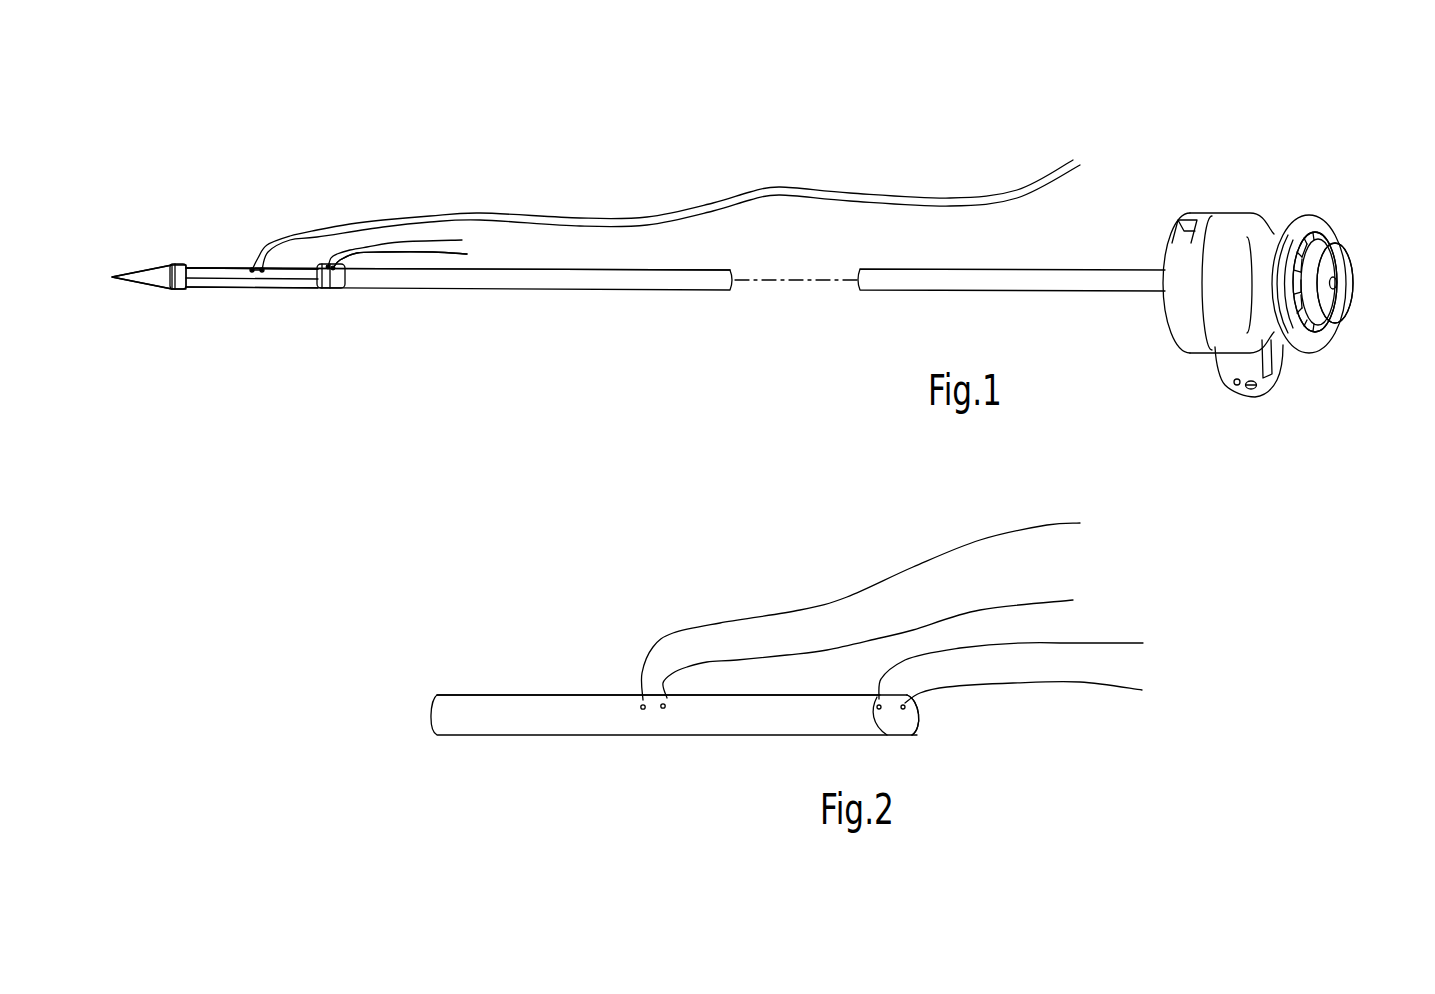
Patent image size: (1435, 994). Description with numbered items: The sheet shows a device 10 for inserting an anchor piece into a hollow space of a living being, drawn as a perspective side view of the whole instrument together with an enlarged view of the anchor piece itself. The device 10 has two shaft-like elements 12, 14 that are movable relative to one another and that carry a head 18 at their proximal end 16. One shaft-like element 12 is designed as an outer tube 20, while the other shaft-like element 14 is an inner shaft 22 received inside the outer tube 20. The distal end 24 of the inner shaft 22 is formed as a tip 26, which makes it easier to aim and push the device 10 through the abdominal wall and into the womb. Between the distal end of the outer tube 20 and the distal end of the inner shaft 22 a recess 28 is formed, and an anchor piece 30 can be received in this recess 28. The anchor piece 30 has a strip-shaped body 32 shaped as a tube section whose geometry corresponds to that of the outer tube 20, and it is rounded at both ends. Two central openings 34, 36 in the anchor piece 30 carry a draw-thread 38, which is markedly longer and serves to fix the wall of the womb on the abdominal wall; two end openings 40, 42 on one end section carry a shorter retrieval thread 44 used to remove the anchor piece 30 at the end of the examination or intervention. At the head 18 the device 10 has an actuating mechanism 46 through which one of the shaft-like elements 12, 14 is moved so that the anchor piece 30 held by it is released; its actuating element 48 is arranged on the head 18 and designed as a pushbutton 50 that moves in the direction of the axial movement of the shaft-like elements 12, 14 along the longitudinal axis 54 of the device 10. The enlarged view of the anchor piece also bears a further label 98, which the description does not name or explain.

In FIG. 1, the device 10 is at (711, 183).
In FIG. 1, the shaft-like element 12 is at (575, 291).
In FIG. 1, the shaft-like element 14 is at (287, 288).
In FIG. 1, the proximal end 16 is at (1238, 180).
In FIG. 1, the head 18 is at (1207, 412).
In FIG. 1, the outer tube 20 is at (640, 290).
In FIG. 1, the inner shaft 22 is at (223, 286).
In FIG. 1, the distal end 24 is at (182, 187).
In FIG. 1, the tip 26 is at (135, 287).
In FIG. 1, the recess 28 is at (328, 320).
In FIG. 1, the anchor piece 30 is at (226, 267).
In FIG. 2, the anchor piece 30 is at (457, 693).
In FIG. 2, the strip-shaped body 32 is at (517, 717).
In FIG. 1, the central opening 34 is at (252, 268).
In FIG. 2, the central opening 34 is at (643, 705).
In FIG. 1, the central opening 36 is at (262, 268).
In FIG. 2, the central opening 36 is at (663, 704).
In FIG. 1, the draw-thread 38 is at (807, 193).
In FIG. 1, the end opening 40 is at (318, 263).
In FIG. 2, the end opening 40 is at (890, 736).
In FIG. 1, the end opening 42 is at (333, 262).
In FIG. 2, the end opening 42 is at (905, 709).
In FIG. 1, the retrieval thread 44 is at (438, 252).
In FIG. 2, the retrieval thread 44 is at (1116, 642).
In FIG. 1, the actuating mechanism 46 is at (1350, 225).
In FIG. 1, the actuating element 48 is at (1345, 323).
In FIG. 1, the pushbutton 50 is at (1347, 283).
In FIG. 1, the longitudinal axis 54 is at (783, 290).
In FIG. 2, the conductor pair 98 is at (782, 612).